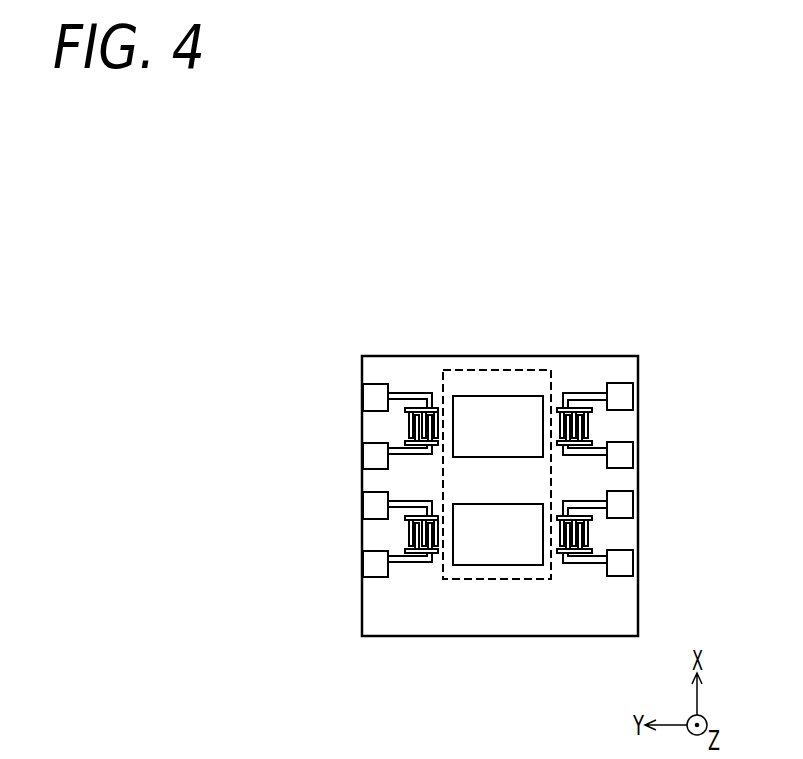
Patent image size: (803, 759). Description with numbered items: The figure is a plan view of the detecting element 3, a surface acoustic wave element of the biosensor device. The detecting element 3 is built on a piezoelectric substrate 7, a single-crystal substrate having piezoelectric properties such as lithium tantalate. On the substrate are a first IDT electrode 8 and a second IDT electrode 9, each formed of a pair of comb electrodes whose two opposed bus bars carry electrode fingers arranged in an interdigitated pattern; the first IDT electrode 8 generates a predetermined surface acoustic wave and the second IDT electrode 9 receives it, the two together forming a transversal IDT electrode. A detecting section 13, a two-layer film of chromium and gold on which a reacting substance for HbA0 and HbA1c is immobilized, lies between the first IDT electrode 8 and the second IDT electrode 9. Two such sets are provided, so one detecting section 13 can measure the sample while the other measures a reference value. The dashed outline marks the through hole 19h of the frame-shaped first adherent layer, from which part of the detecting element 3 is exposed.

The detecting element 3 is at (389, 262).
The piezoelectric substrate 7 is at (625, 370).
The first IDT electrode 8 is at (570, 407).
The second IDT electrode 9 is at (428, 406).
The detecting section 13 is at (496, 418).
The through hole 19h is at (475, 370).